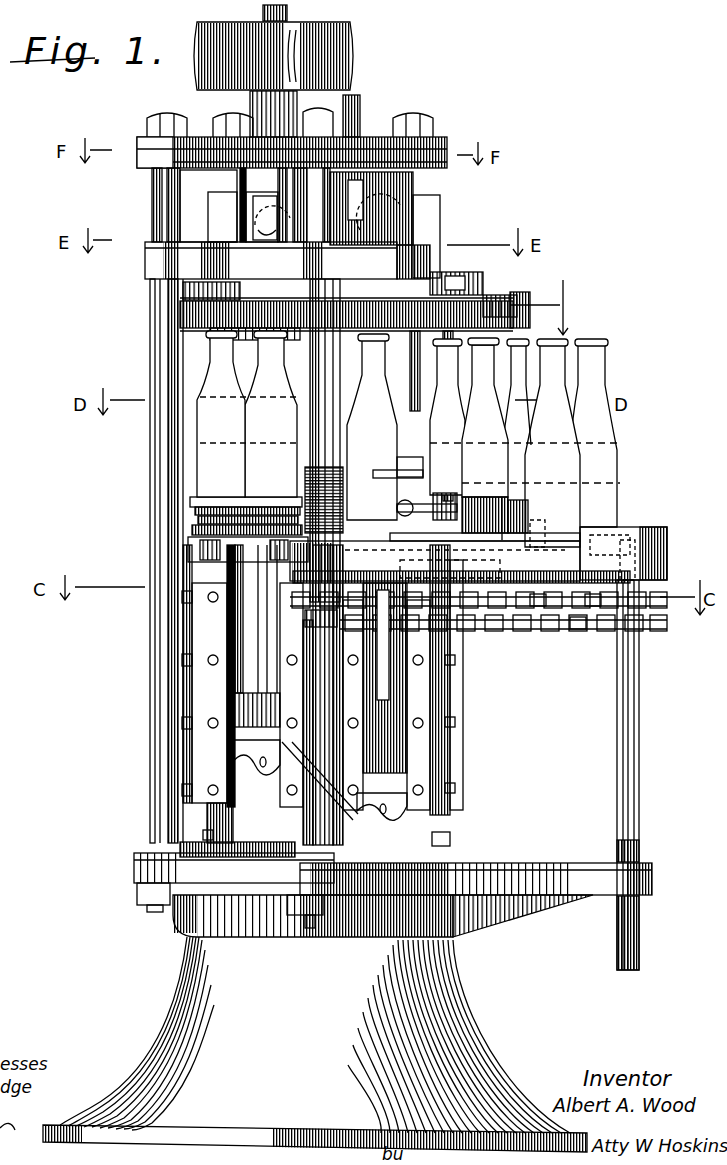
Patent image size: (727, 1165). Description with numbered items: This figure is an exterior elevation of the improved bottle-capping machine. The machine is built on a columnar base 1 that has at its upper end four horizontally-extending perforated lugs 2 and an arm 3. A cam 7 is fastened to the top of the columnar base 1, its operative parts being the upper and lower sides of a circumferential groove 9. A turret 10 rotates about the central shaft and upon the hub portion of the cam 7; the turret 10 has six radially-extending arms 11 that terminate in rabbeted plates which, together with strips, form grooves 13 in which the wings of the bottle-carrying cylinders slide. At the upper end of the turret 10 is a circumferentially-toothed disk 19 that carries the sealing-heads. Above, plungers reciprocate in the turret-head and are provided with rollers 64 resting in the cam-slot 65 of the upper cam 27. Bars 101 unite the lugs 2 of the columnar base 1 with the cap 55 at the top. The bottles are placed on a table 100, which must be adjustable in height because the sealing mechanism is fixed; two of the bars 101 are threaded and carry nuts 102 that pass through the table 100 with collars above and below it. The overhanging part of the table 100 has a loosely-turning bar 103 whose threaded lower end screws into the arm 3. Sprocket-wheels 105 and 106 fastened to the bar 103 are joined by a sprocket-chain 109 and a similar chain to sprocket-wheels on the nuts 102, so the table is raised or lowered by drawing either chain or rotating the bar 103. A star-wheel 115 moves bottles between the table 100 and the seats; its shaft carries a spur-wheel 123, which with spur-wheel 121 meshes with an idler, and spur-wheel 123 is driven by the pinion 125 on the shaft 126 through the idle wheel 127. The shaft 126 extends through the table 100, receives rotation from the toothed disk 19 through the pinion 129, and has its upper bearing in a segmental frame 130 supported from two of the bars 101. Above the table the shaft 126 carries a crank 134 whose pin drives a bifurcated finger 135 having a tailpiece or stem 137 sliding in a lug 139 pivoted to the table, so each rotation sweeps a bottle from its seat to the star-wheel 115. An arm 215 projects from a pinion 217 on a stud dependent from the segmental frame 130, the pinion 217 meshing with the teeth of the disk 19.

The columnar base 1 is at (315, 1044).
The perforated lugs 2 is at (132, 866).
The arm 3 is at (652, 878).
The cam 7 is at (140, 823).
The circumferential groove 9 is at (277, 780).
The turret 10 is at (160, 690).
The radially-extending arms 11 is at (150, 770).
The grooves 13 is at (171, 694).
The circumferentially-toothed disk 19 is at (175, 322).
The upper cam 27 is at (222, 188).
The cap 55 is at (457, 145).
The rollers 64 is at (430, 184).
The cam-slot 65 is at (306, 198).
The table 100 is at (665, 568).
The bars 101 is at (340, 433).
The nuts 102 is at (160, 617).
The bar 103 is at (641, 726).
The sprocket-wheel 105 is at (655, 593).
The sprocket-wheel 106 is at (645, 633).
The sprocket-chain 109 is at (540, 632).
The star-wheel 115 is at (612, 487).
The spur-wheel 121 is at (586, 633).
The spur-wheel 123 is at (575, 663).
The pinion 125 is at (463, 672).
The shaft 126 is at (612, 446).
The idle wheel 127 is at (462, 640).
The pinion 129 is at (484, 283).
The segmental frame 130 is at (150, 268).
The crank 134 is at (454, 468).
The bifurcated finger 135 is at (397, 460).
The tailpiece or stem 137 is at (514, 472).
The lug 139 is at (536, 520).
The arm 215 is at (172, 352).
The pinion 217 is at (190, 347).